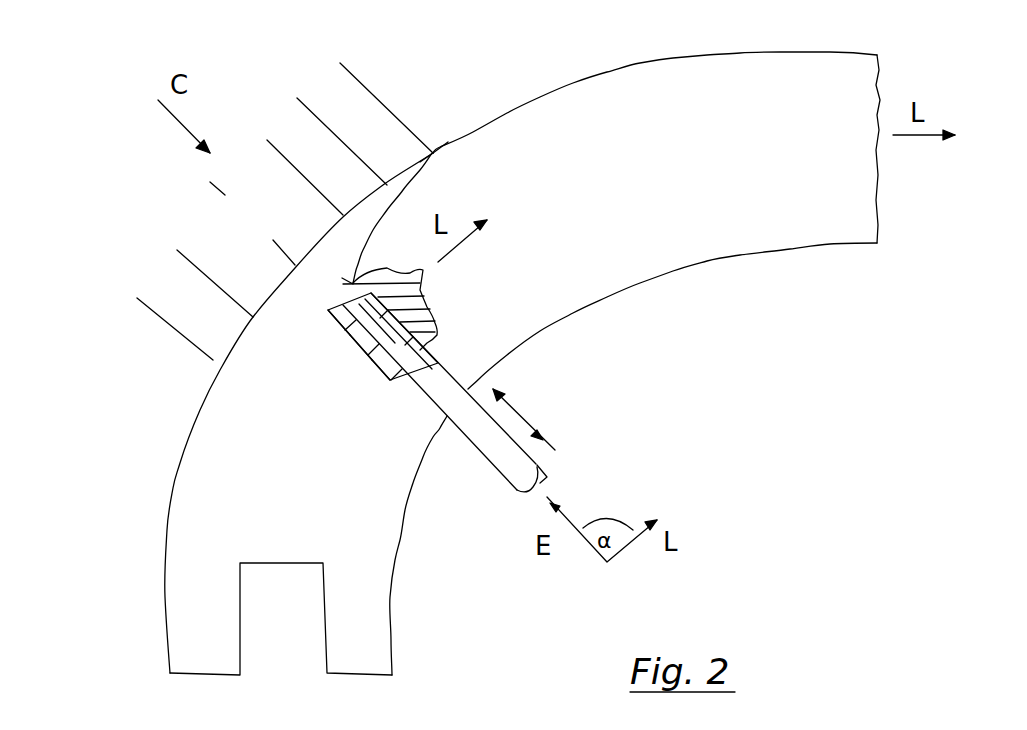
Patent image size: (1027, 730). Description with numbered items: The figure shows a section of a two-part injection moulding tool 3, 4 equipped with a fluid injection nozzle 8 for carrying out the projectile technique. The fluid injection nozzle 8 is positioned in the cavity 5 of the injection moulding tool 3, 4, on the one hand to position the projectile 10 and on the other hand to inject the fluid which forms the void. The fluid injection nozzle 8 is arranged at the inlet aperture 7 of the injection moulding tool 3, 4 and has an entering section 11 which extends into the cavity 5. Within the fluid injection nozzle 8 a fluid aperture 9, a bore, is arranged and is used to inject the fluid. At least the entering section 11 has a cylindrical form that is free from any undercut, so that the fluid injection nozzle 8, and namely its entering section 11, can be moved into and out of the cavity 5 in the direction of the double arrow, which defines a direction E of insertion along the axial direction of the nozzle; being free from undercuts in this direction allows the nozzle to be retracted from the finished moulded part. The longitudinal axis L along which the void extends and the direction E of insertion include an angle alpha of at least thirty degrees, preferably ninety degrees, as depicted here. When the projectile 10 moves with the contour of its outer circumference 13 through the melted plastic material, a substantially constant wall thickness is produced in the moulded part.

The injection moulding tool part 3 is at (285, 368).
The injection moulding tool part 4 is at (389, 251).
The cavity 5 is at (661, 173).
The inlet aperture 7 is at (519, 380).
The fluid injection nozzle 8 is at (502, 458).
The fluid aperture 9 is at (368, 358).
The projectile 10 is at (335, 320).
The entering section 11 is at (395, 386).
The contour of the outer circumference 13 is at (433, 153).